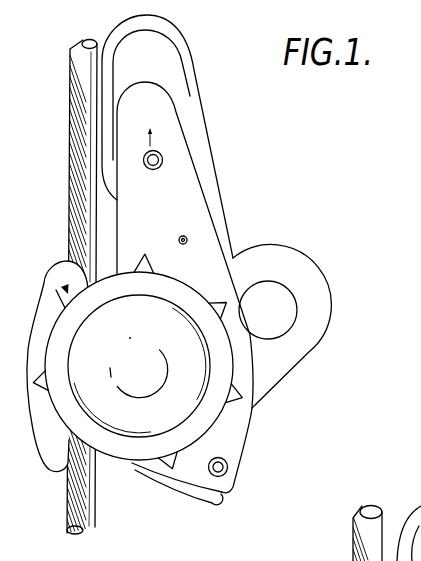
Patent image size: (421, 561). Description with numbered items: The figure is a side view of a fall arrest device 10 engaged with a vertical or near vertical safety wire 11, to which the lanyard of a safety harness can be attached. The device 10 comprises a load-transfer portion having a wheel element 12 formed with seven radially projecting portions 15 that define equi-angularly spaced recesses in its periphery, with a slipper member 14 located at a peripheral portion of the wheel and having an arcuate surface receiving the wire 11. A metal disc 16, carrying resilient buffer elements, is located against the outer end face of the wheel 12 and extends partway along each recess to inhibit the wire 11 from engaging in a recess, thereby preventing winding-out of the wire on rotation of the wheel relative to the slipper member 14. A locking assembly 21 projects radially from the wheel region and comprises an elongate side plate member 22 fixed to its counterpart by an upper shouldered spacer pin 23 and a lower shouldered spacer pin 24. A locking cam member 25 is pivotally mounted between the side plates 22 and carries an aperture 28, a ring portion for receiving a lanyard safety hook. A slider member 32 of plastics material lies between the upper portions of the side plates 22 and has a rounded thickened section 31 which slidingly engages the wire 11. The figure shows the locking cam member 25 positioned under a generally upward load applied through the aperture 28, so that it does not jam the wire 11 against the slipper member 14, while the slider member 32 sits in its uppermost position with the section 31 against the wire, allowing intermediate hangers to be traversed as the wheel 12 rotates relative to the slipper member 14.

The fall arrest device 10 is at (197, 288).
The safety wire 11 is at (72, 525).
The wheel element 12 is at (66, 291).
The slipper member 14 is at (57, 364).
The radially projecting portion 15 is at (175, 468).
The metal disc 16 is at (137, 398).
The locking assembly 21 is at (229, 493).
The side plate member 22 is at (235, 288).
The shouldered spacer pin 23 is at (162, 156).
The shouldered spacer pin 24 is at (227, 463).
The locking cam member 25 is at (287, 270).
The aperture 28 is at (293, 326).
The rounded thickened section 31 is at (380, 513).
The slider member 32 is at (153, 53).